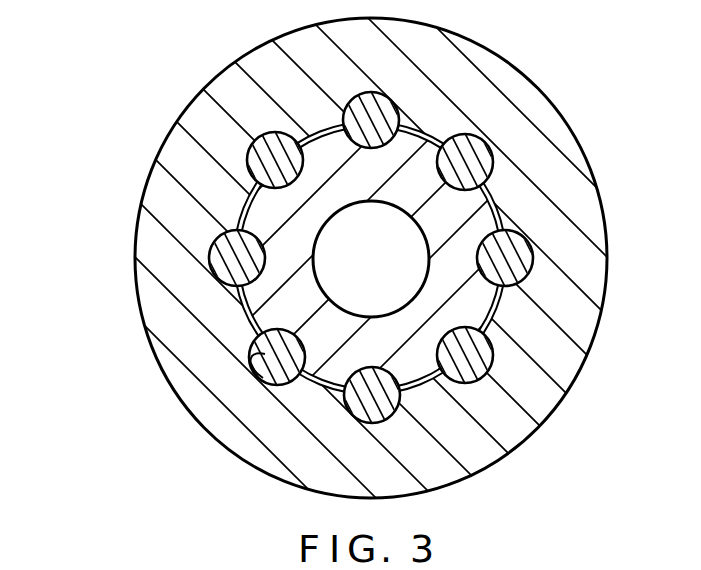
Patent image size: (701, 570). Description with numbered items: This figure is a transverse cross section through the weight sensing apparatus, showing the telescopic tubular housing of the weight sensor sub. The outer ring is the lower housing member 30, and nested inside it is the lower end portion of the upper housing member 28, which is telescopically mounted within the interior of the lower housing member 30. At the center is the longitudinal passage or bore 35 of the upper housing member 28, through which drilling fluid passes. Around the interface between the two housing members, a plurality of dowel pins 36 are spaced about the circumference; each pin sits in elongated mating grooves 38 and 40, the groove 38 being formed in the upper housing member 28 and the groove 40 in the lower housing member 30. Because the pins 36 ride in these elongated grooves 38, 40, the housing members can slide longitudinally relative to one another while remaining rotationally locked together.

The lower housing member 30 is at (488, 93).
The upper housing member 28 is at (480, 213).
The longitudinal passage or bore 35 is at (397, 311).
The dowel pins 36 is at (255, 166).
The elongated mating groove 38 is at (343, 393).
The elongated mating groove 40 is at (261, 375).